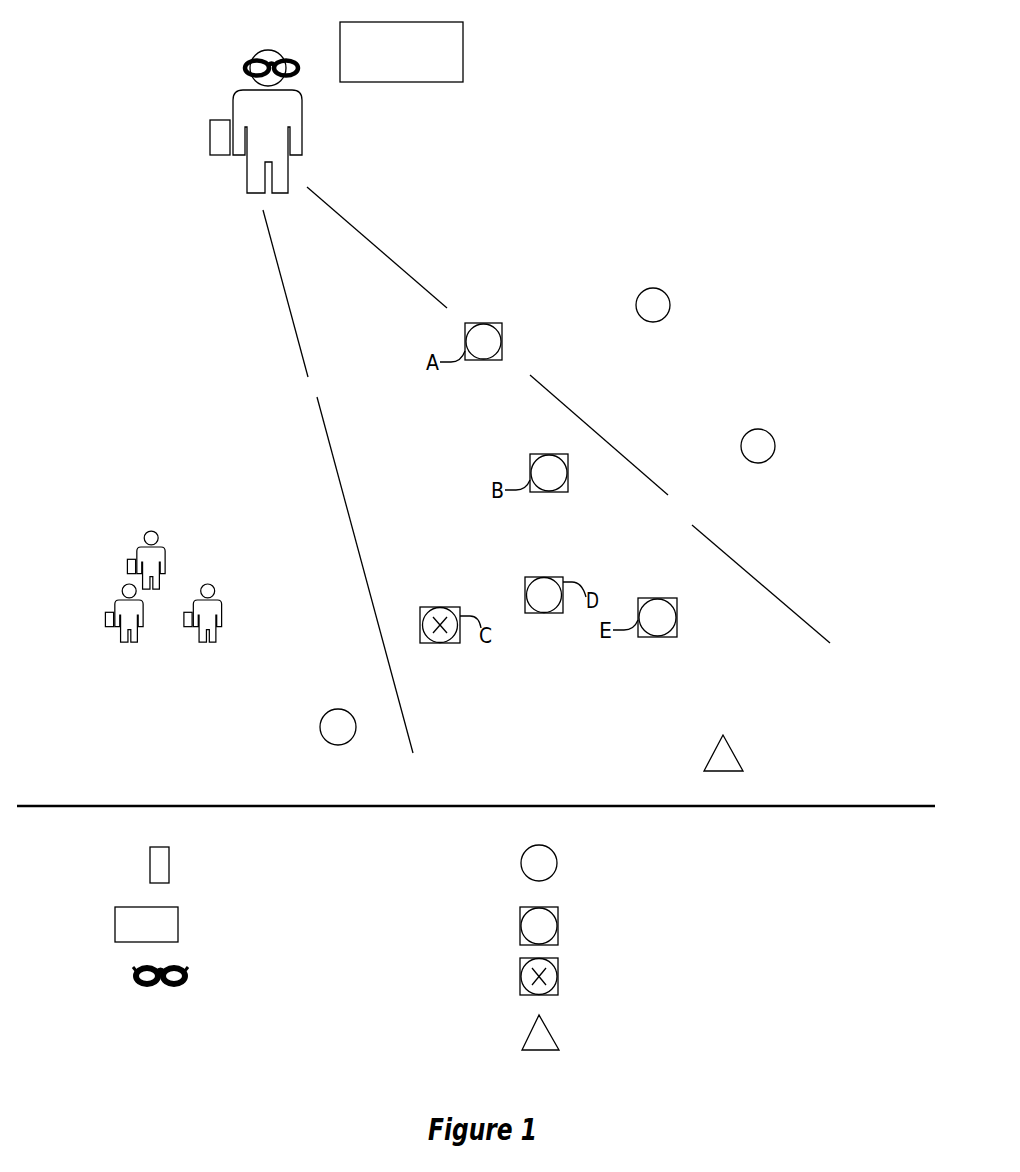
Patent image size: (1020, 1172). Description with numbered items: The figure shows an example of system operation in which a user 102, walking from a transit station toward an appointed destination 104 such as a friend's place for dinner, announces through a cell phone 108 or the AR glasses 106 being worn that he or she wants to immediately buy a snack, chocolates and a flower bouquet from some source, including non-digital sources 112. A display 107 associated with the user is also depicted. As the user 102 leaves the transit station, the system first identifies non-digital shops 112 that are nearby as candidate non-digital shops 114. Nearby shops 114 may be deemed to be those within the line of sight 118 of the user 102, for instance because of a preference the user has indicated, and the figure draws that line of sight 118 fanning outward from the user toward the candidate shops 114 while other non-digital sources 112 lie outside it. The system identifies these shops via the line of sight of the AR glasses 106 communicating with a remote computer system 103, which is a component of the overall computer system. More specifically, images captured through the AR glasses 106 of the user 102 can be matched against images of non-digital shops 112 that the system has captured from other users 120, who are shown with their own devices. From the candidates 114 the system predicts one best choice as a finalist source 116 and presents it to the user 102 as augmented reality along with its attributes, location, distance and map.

The user 102 is at (237, 92).
The display 107 is at (297, 61).
The line of sight 118 is at (790, 608).
The other users 120 is at (197, 541).
The cell phone 108 is at (271, 865).
The remote computer system 103 is at (312, 924).
The AR glasses 106 is at (242, 977).
The non-digital sources 112 is at (674, 863).
The candidate non-digital shops 114 is at (671, 926).
The finalist source 116 is at (651, 976).
The destination 104 is at (630, 1032).